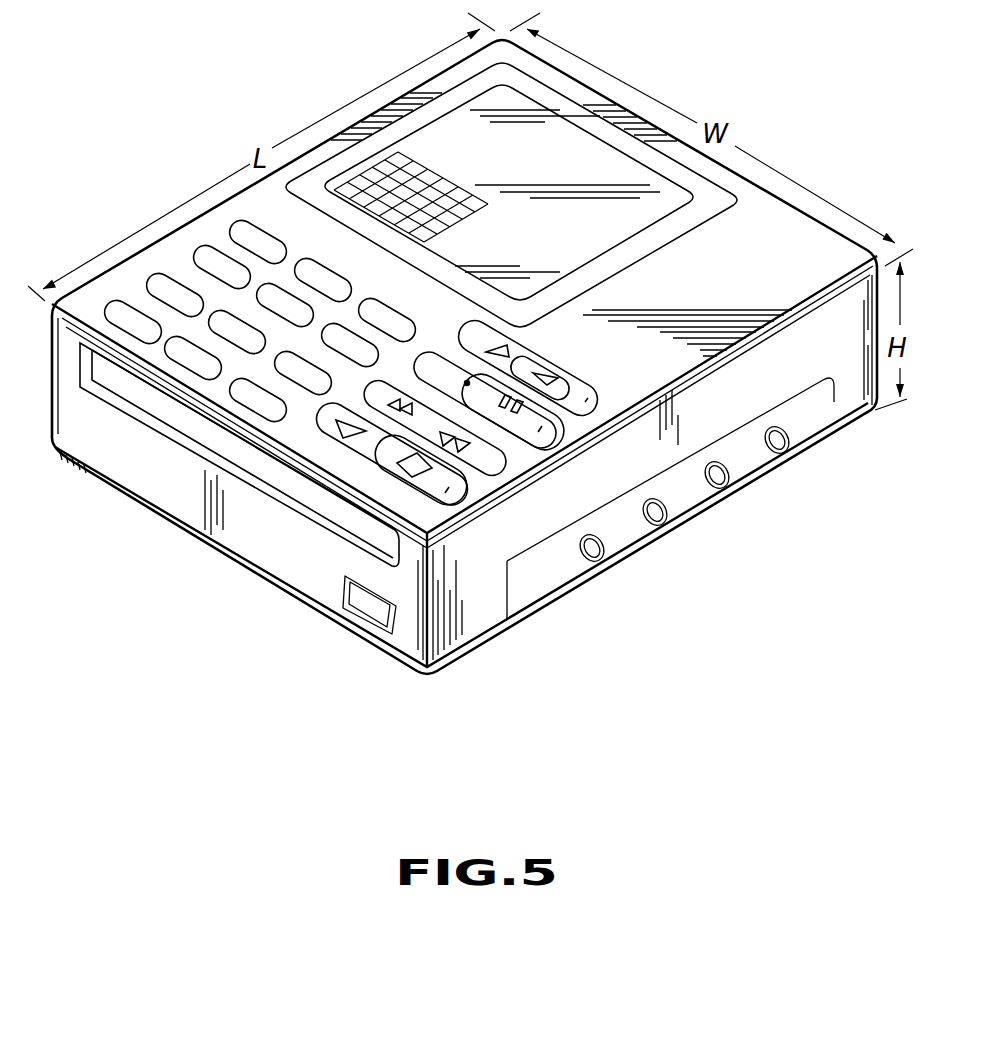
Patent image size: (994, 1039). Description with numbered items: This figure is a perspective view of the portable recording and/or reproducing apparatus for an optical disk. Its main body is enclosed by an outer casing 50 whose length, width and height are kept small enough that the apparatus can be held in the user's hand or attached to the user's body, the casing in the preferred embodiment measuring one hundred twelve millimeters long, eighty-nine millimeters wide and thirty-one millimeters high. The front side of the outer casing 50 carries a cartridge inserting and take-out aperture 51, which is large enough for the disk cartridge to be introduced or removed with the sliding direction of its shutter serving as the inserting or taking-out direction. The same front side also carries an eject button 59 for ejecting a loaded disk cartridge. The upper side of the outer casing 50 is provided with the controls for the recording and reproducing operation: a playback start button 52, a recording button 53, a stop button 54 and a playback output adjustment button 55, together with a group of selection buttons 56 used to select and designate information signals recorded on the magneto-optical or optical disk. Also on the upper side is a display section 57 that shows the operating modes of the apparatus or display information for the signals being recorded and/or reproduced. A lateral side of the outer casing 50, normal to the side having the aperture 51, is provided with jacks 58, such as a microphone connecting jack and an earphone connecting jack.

The outer casing 50 is at (62, 357).
The cartridge inserting and take-out aperture 51 is at (90, 388).
The playback start button 52 is at (340, 437).
The recording button 53 is at (447, 350).
The stop button 54 is at (450, 493).
The playback output adjustment button 55 is at (585, 393).
The selection buttons 56 is at (203, 367).
The display section 57 is at (650, 207).
The jacks 58 is at (590, 562).
The eject button 59 is at (363, 623).